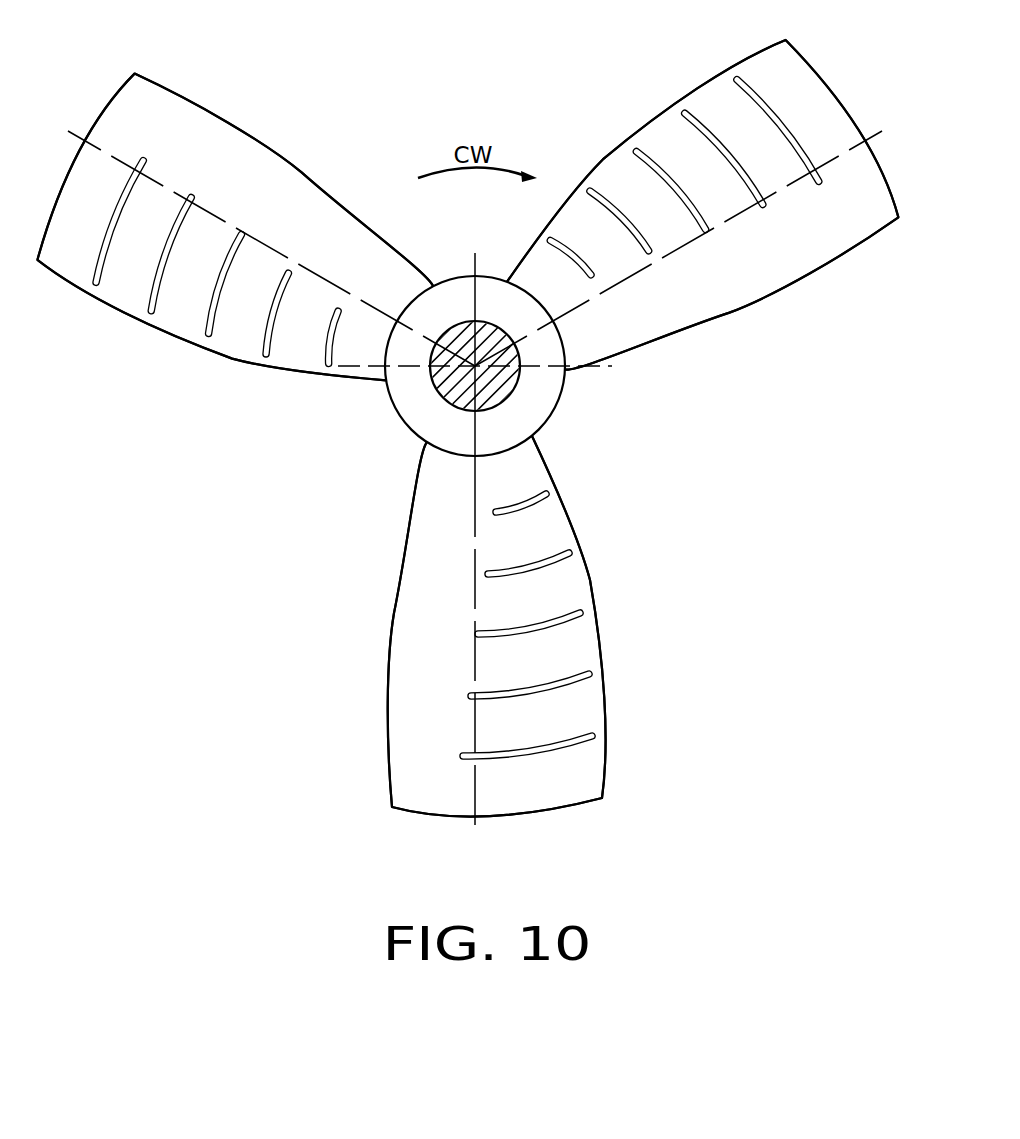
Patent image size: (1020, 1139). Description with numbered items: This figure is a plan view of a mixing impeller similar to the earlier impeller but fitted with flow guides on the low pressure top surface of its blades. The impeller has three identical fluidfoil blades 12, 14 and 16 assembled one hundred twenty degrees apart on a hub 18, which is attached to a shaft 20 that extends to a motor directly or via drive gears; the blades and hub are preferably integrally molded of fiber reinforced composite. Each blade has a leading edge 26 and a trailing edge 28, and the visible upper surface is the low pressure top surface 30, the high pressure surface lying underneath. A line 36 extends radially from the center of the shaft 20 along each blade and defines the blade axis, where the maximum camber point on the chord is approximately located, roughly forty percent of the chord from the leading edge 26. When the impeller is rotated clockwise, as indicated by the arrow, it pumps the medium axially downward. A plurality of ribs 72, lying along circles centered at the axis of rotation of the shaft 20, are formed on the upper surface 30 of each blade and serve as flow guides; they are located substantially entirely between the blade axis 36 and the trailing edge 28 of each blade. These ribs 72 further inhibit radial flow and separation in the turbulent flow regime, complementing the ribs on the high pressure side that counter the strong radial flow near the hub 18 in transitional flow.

The blade 12 is at (822, 247).
The blade 14 is at (585, 647).
The blade 16 is at (185, 112).
The hub 18 is at (395, 418).
The shaft 20 is at (507, 388).
The leading edge 26 is at (240, 125).
The trailing edge 28 is at (205, 353).
The top surface 30 is at (130, 100).
The blade axis line 36 is at (268, 245).
The ribs 72 is at (273, 340).